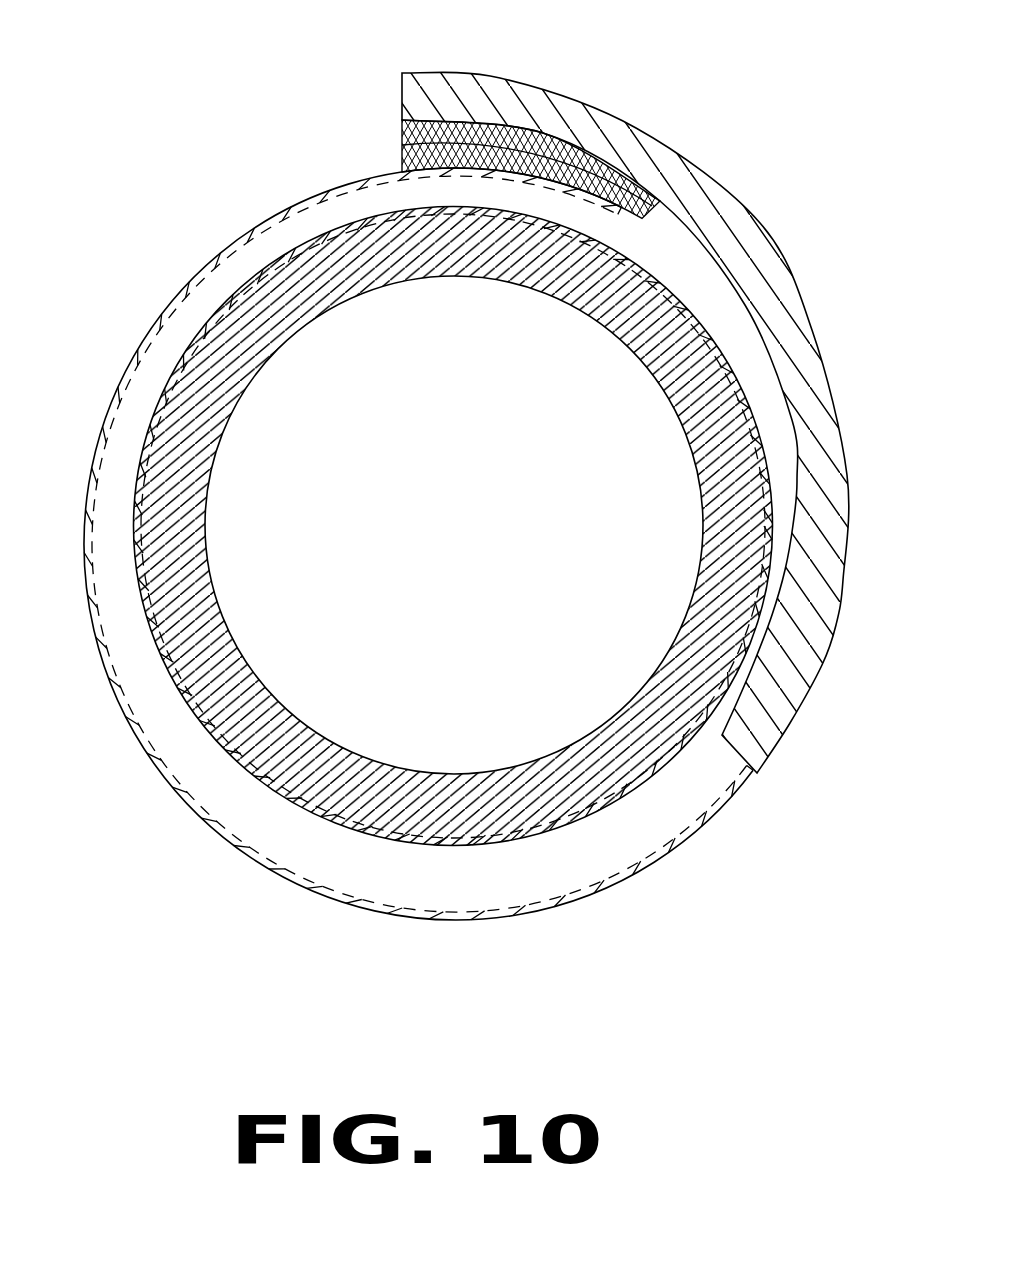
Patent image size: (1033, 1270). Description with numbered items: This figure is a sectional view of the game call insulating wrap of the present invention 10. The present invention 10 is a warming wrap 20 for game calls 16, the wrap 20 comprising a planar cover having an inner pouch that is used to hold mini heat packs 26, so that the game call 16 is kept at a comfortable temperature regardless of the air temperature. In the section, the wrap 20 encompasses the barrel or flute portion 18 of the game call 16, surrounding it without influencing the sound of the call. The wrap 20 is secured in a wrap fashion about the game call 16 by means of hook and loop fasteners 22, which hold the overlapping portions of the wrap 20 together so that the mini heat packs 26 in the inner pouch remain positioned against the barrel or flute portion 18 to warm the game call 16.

The present invention 10 is at (455, 541).
The game call 16 is at (247, 710).
The barrel or flute portion 18 is at (207, 527).
The warming wrap 20 is at (456, 925).
The hook and loop fasteners 22 is at (580, 143).
The mini heat packs 26 is at (228, 268).